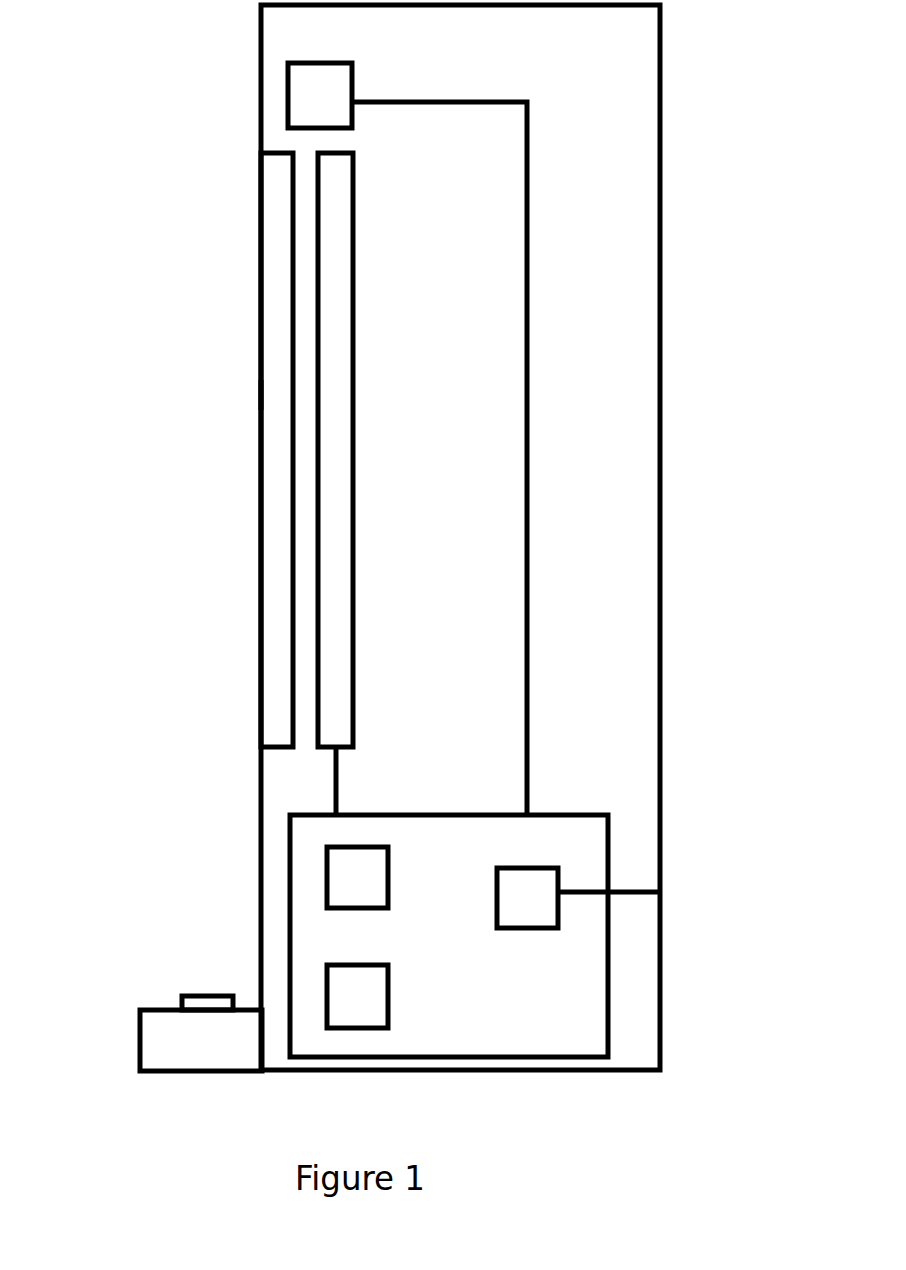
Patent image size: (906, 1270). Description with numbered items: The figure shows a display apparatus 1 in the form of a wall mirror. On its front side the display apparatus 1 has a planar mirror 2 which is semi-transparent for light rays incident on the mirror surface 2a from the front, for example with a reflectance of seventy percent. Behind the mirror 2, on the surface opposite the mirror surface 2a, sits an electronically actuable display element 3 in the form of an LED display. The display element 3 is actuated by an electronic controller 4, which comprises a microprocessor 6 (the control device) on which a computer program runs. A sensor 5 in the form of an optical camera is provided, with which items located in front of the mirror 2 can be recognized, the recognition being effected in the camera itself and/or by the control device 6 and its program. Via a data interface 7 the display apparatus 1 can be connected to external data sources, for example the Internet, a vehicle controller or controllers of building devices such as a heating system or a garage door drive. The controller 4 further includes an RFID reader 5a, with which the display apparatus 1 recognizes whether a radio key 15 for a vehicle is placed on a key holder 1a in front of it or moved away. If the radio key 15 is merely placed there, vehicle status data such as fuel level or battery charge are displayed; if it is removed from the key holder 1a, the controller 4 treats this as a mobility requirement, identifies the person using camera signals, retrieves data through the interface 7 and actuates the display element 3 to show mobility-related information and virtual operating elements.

The display apparatus 1 is at (661, 150).
The key holder 1a is at (140, 1035).
The planar mirror 2 is at (283, 243).
The mirror surface 2a is at (262, 395).
The display element 3 is at (353, 266).
The electronic controller 4 is at (447, 815).
The sensor 5 is at (352, 72).
The RFID reader 5a is at (388, 995).
The microprocessor 6 is at (388, 882).
The data interface 7 is at (497, 890).
The radio key 15 is at (222, 996).